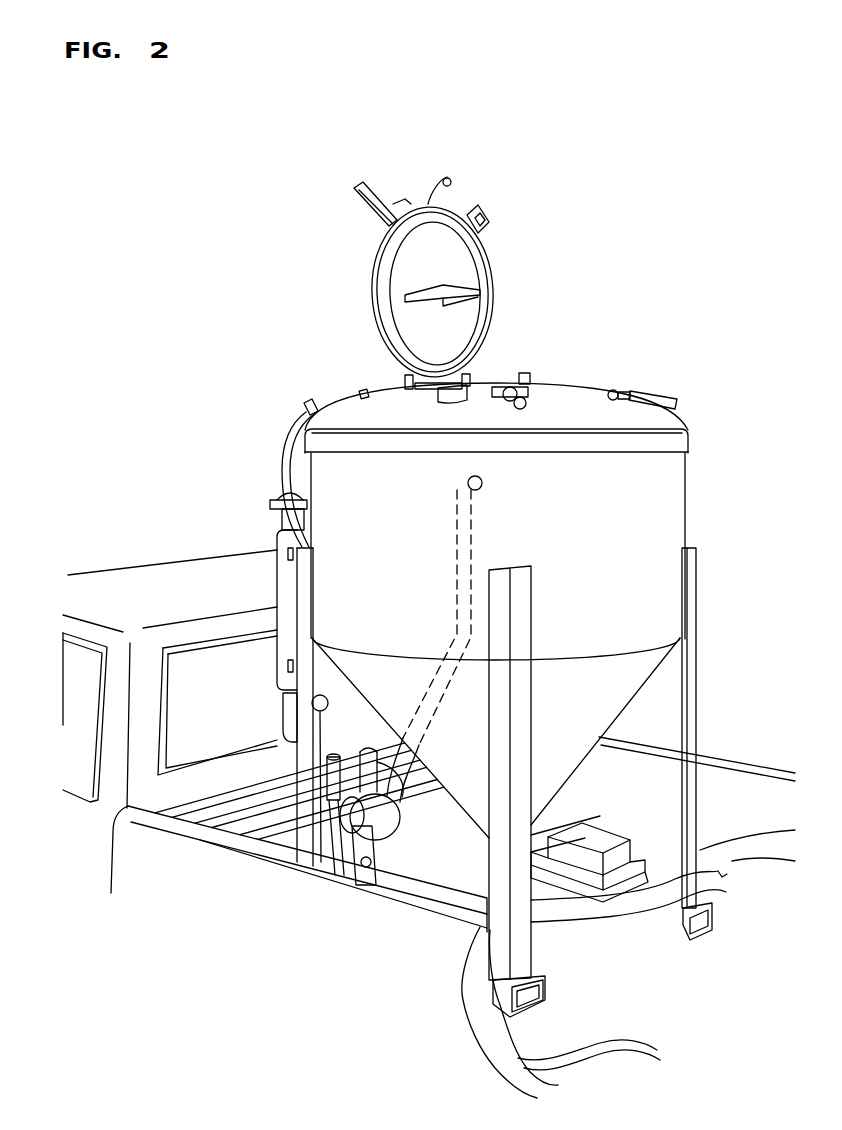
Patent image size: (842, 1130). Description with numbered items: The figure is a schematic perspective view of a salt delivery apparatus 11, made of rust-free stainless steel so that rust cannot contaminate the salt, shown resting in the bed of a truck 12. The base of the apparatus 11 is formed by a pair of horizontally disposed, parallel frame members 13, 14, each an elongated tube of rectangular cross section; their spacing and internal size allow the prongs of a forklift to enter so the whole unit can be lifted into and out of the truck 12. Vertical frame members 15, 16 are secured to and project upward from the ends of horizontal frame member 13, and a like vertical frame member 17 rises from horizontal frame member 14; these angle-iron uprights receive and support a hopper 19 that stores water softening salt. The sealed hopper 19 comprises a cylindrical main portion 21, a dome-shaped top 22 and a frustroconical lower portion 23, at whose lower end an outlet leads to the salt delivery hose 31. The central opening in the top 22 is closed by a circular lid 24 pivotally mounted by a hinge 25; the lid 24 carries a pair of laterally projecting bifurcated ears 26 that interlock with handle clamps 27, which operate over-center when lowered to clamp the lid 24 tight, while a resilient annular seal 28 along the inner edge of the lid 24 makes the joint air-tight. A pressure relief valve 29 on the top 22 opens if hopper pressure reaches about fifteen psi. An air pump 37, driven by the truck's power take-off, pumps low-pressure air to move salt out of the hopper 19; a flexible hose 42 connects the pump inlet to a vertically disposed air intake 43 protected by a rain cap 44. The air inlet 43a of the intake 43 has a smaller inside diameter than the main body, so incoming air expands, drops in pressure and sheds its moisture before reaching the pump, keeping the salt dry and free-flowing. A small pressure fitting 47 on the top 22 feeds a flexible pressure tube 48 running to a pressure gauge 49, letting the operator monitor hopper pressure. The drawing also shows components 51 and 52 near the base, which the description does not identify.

The salt delivery apparatus 11 is at (128, 200).
The truck 12 is at (110, 606).
The horizontal frame member 13 is at (548, 1000).
The horizontal frame member 14 is at (713, 915).
The vertical frame member 15 is at (532, 937).
The vertical frame member 16 is at (306, 823).
The vertical frame member 17 is at (695, 685).
The hopper 19 is at (700, 468).
The cylindrical main portion 21 is at (680, 540).
The dome-shaped top 22 is at (655, 427).
The frustroconical lower portion 23 is at (600, 703).
The circular lid 24 is at (377, 268).
The hinge 25 is at (405, 380).
The bifurcated ears 26 is at (362, 184).
The handle clamps 27 is at (520, 405).
The resilient annular seal 28 is at (386, 290).
The pressure relief valve 29 is at (447, 400).
The salt delivery hose 31 is at (640, 930).
The air pump 37 is at (357, 825).
The flexible hose 42 is at (283, 717).
The air intake 43 is at (282, 580).
The air inlet 43a is at (278, 527).
The rain cap 44 is at (270, 498).
The pressure fitting 47 is at (306, 404).
The flexible pressure tube 48 is at (281, 451).
The pressure gauge 49 is at (362, 757).
The battery box 51 is at (598, 835).
The battery tray 52 is at (632, 878).